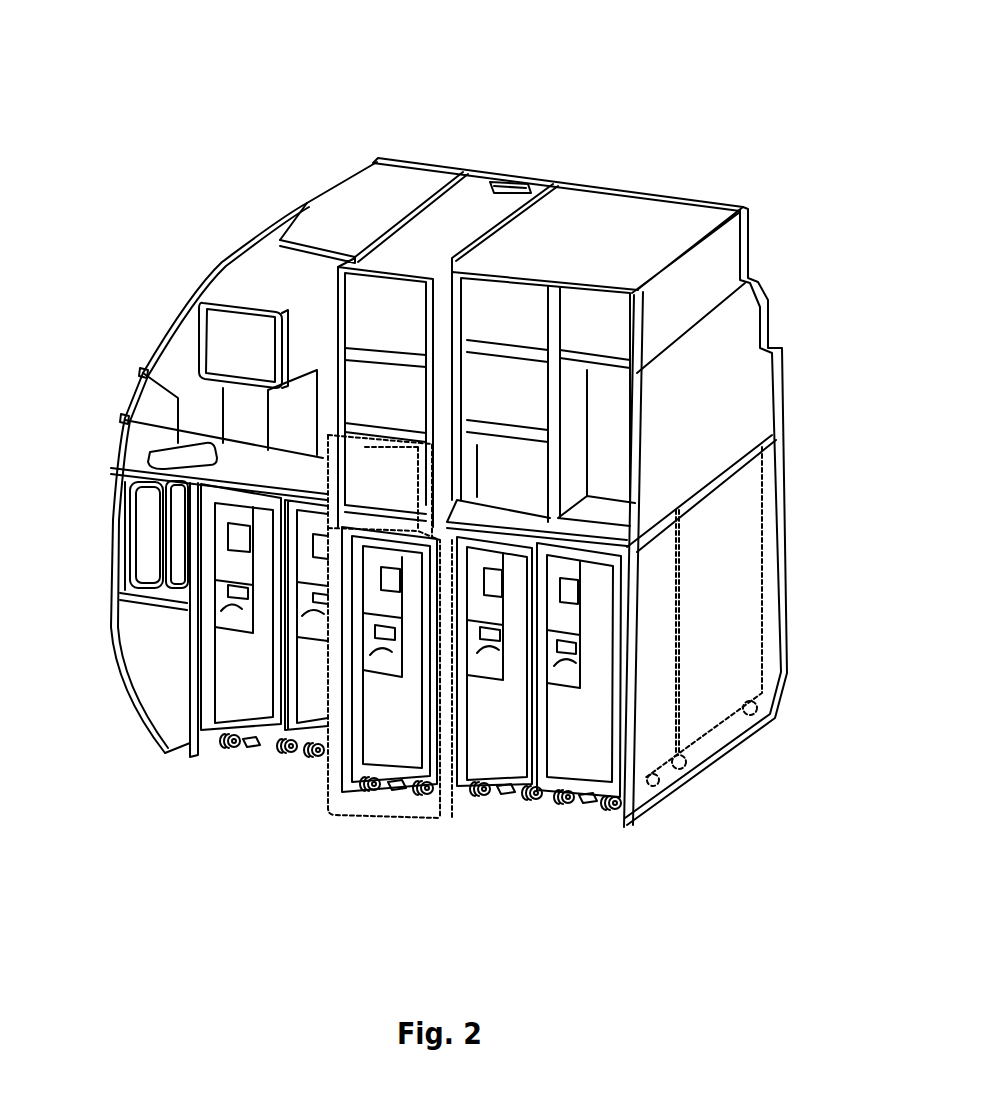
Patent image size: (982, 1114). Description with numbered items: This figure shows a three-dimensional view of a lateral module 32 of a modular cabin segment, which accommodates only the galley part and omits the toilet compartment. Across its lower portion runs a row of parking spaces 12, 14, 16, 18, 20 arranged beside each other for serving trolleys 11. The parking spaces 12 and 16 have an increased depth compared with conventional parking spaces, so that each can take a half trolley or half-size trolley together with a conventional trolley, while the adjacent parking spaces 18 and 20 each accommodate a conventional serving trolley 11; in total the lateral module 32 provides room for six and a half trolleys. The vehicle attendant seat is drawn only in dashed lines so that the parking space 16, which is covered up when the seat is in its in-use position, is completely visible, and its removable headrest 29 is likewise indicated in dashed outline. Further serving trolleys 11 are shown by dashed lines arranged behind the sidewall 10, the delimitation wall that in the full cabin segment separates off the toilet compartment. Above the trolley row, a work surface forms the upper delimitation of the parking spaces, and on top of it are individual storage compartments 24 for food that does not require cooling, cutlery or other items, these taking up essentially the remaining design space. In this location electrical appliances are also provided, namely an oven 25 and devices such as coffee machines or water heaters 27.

The delimitation wall 10 is at (731, 600).
The serving trolley 11 is at (590, 750).
The parking space 12 is at (585, 822).
The parking space 14 is at (503, 818).
The parking space 16 is at (415, 838).
The parking space 18 is at (316, 775).
The parking space 20 is at (241, 764).
The storage compartment 24 is at (230, 322).
The oven 25 is at (508, 466).
The water heater 27 is at (203, 399).
The headrest 29 is at (381, 468).
The lateral module 32 is at (531, 128).